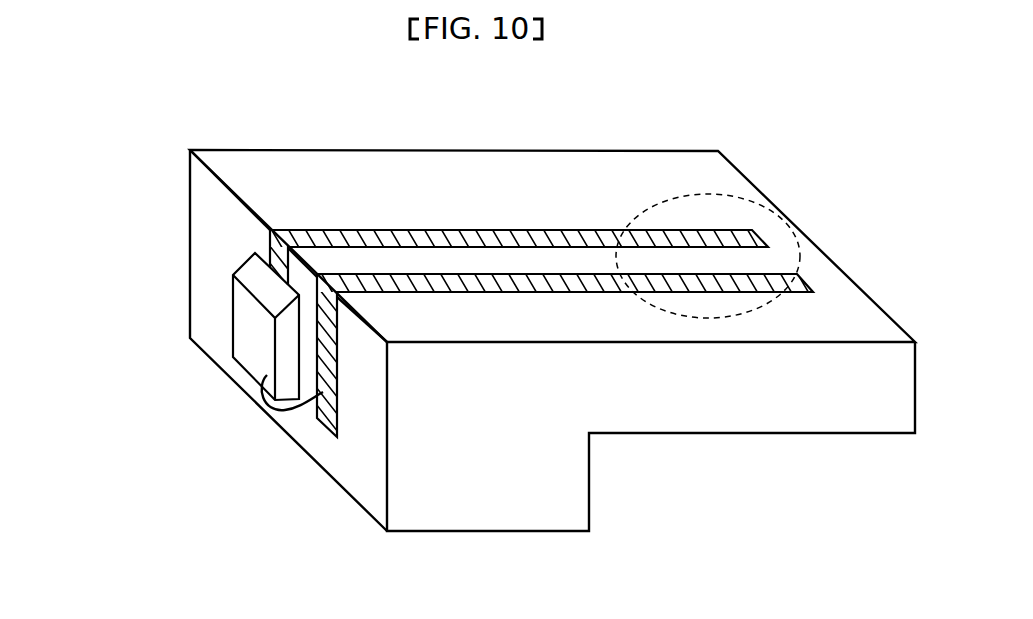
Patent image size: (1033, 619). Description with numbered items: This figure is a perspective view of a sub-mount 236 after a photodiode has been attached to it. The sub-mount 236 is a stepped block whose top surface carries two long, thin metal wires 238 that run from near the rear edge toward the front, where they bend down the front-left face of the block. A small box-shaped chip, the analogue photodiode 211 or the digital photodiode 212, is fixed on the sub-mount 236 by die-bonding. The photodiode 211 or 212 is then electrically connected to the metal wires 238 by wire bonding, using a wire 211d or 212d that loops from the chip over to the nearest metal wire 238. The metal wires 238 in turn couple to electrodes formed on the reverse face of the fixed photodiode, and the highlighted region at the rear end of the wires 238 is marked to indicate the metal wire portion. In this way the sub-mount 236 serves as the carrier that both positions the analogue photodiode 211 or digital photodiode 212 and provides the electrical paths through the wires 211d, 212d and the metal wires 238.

The sub-mount 236 is at (820, 428).
The metal wires 238 is at (703, 176).
The analogue photodiode 211 is at (165, 326).
The digital photodiode 212 is at (233, 312).
The wire 211d is at (189, 411).
The wire 212d is at (254, 402).